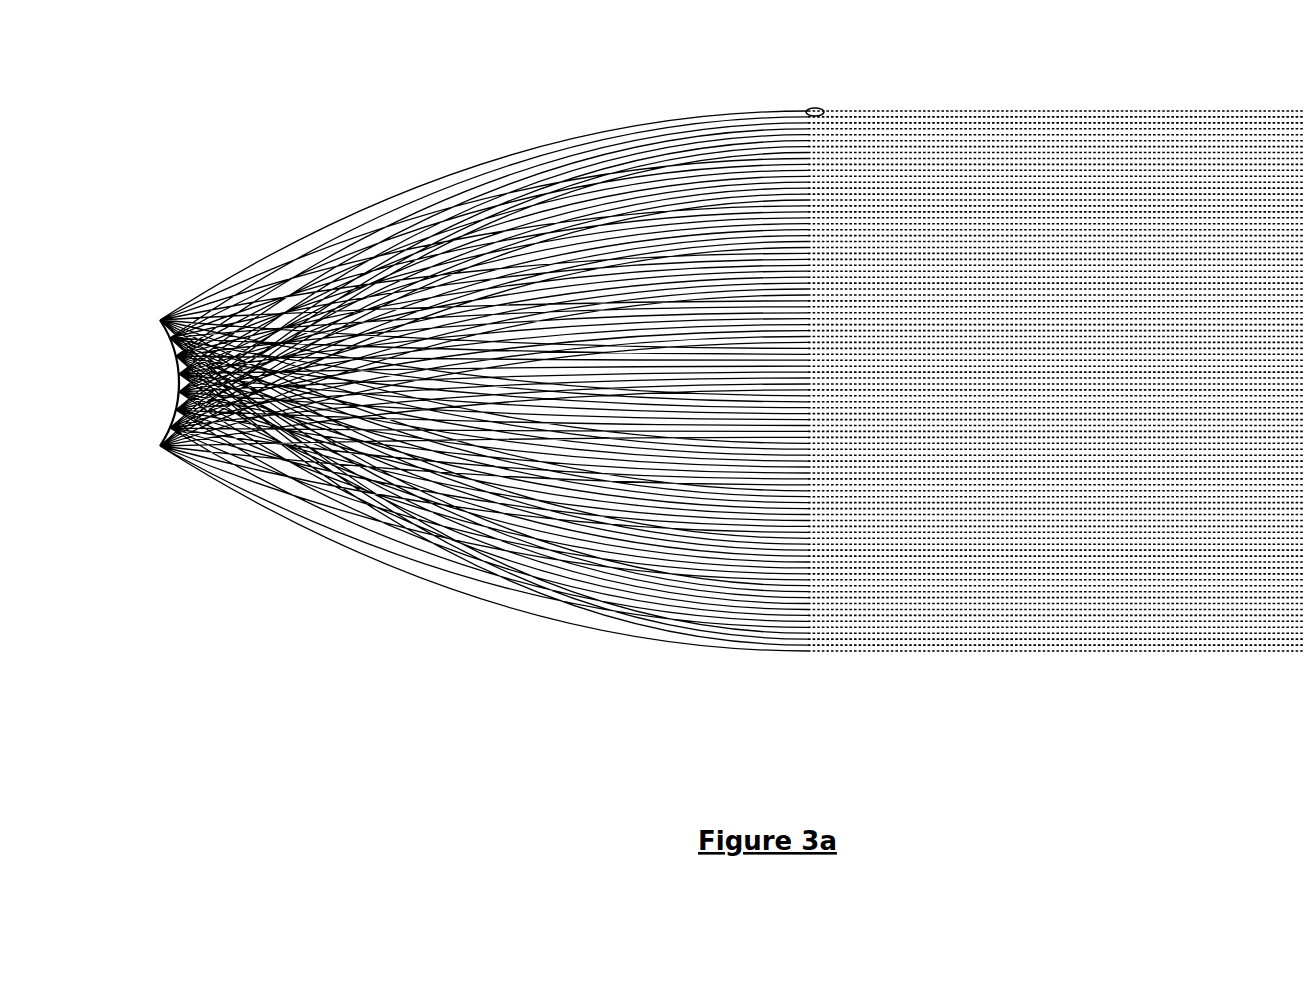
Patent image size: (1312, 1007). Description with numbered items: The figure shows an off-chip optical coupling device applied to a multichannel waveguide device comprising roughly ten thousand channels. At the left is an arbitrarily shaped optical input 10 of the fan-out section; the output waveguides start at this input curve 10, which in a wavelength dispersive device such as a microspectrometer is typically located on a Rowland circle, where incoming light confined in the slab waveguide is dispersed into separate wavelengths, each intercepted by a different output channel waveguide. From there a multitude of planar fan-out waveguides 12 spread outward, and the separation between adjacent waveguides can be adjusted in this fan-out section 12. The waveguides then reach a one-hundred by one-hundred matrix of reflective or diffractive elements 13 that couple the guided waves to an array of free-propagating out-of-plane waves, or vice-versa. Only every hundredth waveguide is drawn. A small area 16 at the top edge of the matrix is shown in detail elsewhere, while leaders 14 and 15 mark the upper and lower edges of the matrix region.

The optical input 10 is at (171, 372).
The planar fan-out waveguides 12 is at (570, 582).
The matrix of reflective or diffractive elements 13 is at (1048, 630).
The upper boundary of collimated beam 14 is at (1311, 100).
The lower boundary of collimated beam 15 is at (1311, 648).
The area 16 is at (800, 101).